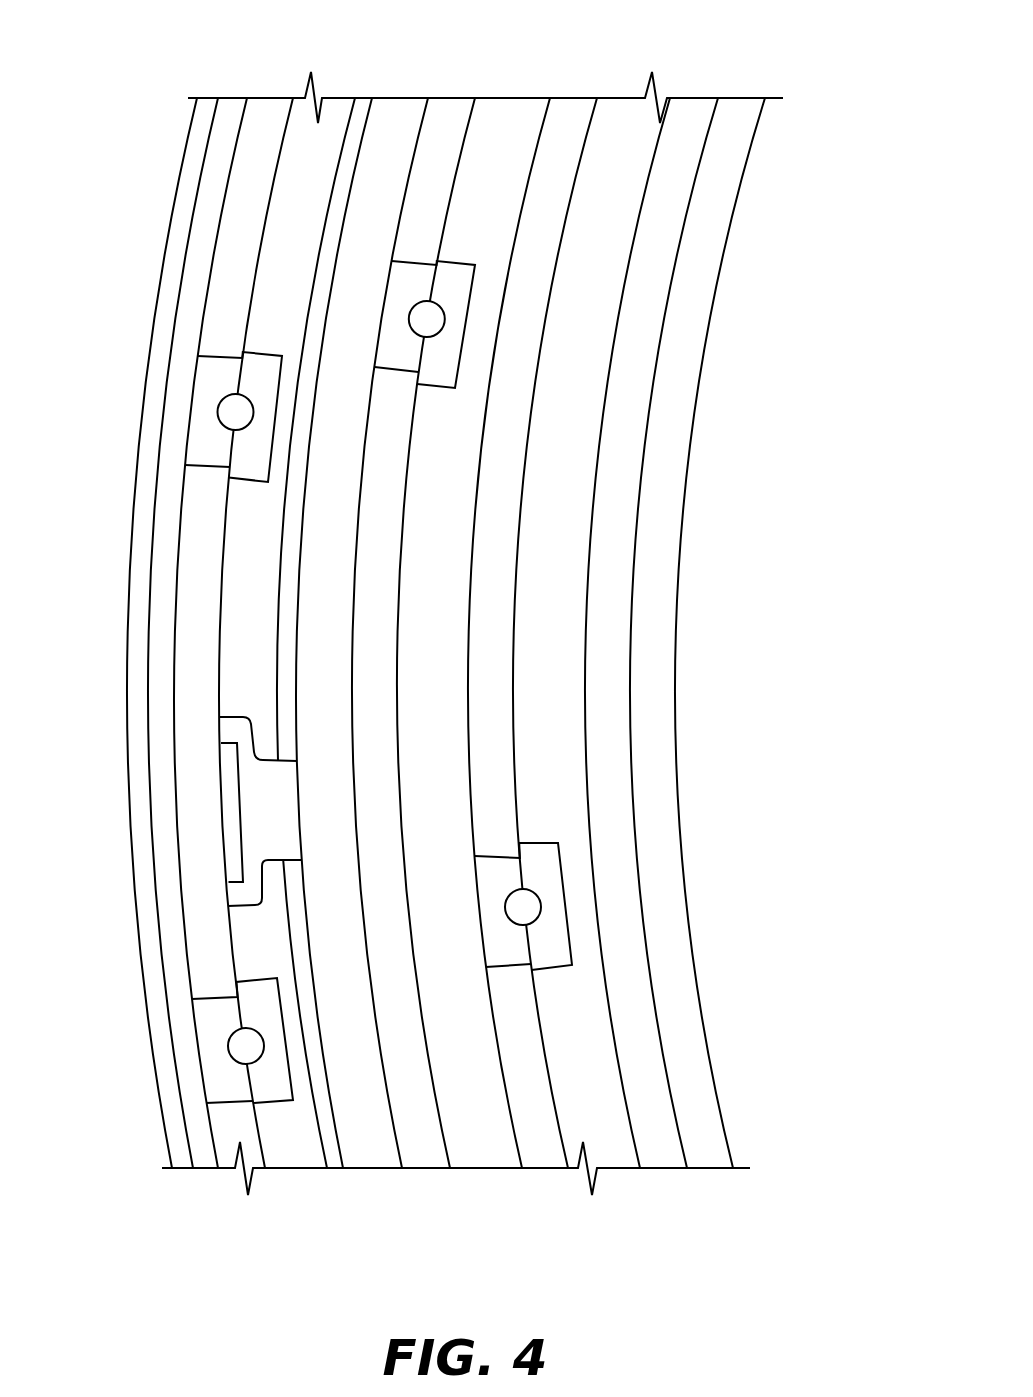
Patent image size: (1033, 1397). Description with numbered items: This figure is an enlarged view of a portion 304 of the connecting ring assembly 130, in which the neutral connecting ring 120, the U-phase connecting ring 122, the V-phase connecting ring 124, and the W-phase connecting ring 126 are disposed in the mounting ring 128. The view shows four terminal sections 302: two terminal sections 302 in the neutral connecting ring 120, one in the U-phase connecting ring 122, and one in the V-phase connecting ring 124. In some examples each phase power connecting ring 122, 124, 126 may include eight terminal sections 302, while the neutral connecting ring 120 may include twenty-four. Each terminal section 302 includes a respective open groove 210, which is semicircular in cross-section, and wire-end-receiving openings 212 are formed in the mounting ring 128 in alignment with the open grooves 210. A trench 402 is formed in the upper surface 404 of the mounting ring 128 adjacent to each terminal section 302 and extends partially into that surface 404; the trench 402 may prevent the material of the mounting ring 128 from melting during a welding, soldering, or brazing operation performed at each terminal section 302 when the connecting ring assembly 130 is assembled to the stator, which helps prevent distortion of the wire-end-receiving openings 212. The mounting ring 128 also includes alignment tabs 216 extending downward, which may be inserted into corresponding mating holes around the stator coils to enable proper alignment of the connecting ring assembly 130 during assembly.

The portion of the connecting ring assembly 304 is at (121, 72).
The connecting ring assembly 130 is at (756, 319).
The neutral (N) connecting ring 120 is at (178, 558).
The U-phase connecting ring 122 is at (427, 1048).
The V-phase connecting ring 124 is at (550, 1082).
The W-phase connecting ring 126 is at (673, 1108).
The mounting ring 128 is at (687, 913).
The open groove 210 is at (218, 406).
The wire-end-receiving opening 212 is at (447, 327).
The alignment tab 216 is at (243, 797).
The terminal section 302 is at (373, 323).
The trench 402 is at (473, 300).
The upper surface of the mounting ring 404 is at (263, 588).